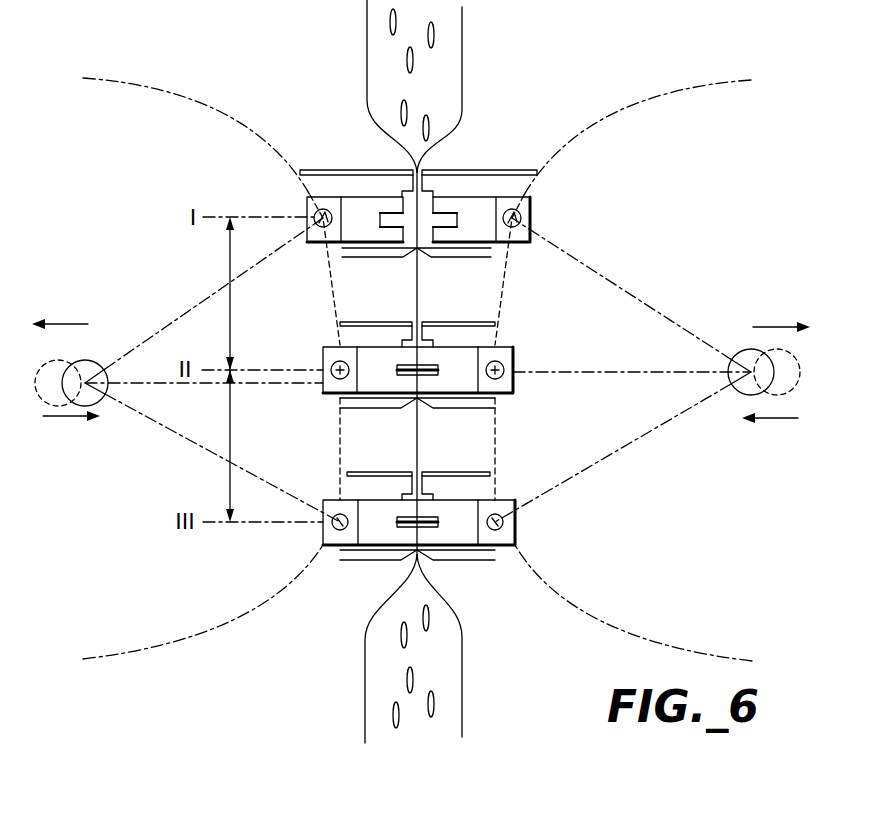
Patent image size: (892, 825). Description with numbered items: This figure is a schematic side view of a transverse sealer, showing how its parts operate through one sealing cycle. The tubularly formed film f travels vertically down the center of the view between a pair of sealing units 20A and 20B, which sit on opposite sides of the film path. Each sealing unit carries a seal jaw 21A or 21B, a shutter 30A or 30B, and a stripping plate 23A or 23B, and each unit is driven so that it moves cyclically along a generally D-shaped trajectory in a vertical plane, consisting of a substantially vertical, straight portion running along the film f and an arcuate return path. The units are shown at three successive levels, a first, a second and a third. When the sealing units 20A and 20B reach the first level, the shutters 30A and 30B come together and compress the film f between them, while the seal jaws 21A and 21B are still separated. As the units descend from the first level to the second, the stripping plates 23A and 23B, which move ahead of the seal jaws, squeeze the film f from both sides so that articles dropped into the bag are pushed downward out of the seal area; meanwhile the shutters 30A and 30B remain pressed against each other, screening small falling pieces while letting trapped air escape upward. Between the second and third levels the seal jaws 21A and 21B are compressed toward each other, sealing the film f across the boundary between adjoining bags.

The sealing unit 20A is at (545, 228).
The sealing unit 20B is at (285, 205).
The seal jaw 21A is at (473, 226).
The seal jaw 21B is at (380, 522).
The stripping plate 23A is at (450, 561).
The stripping plate 23B is at (383, 561).
The shutter 30A is at (461, 170).
The shutter 30B is at (387, 170).
The film f is at (367, 62).